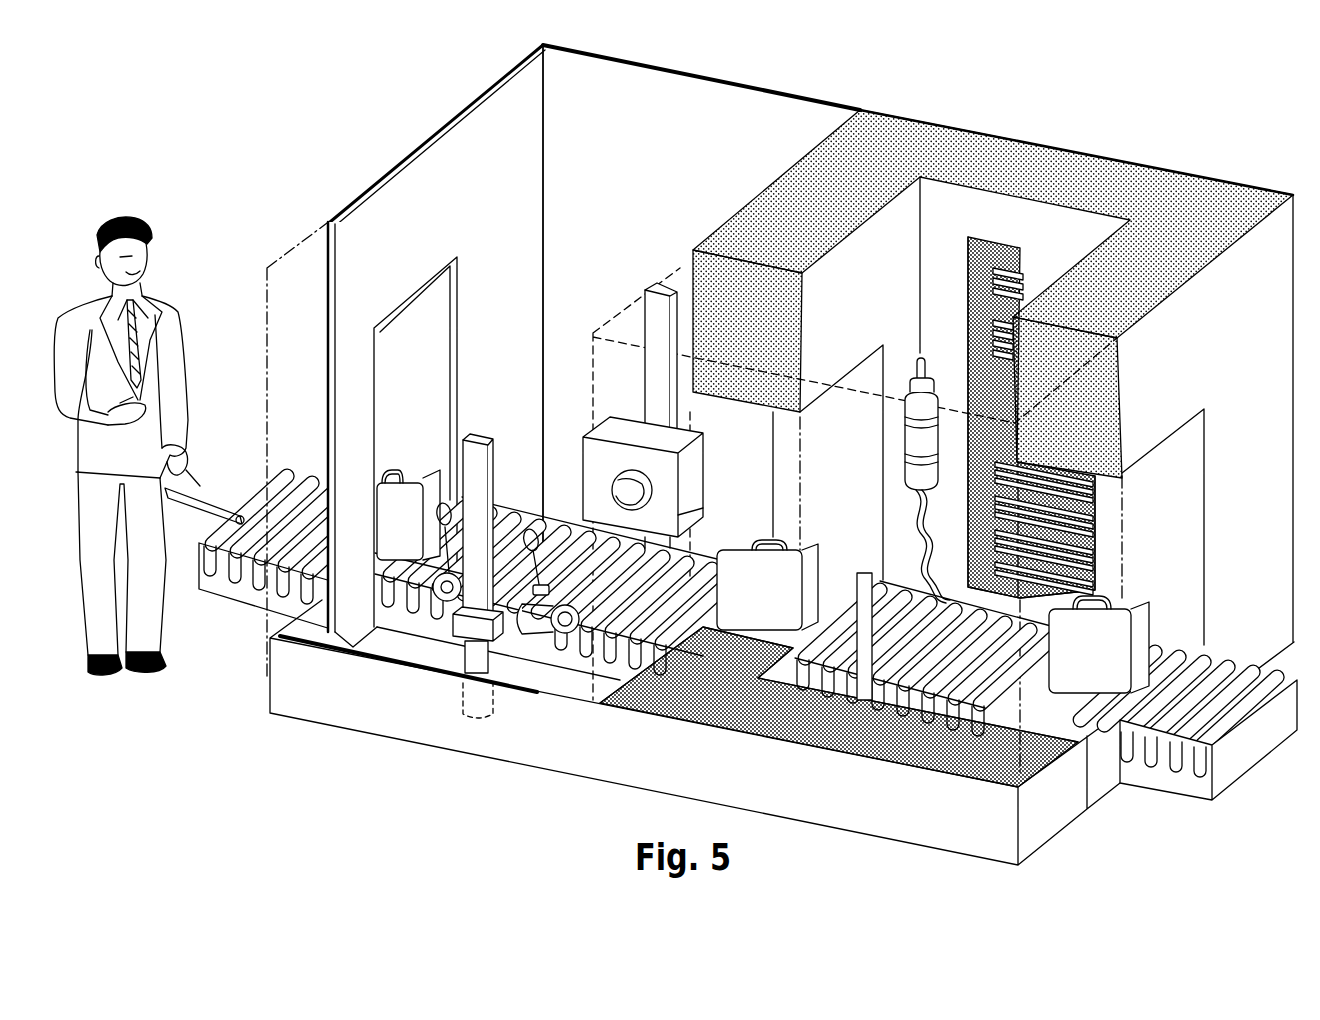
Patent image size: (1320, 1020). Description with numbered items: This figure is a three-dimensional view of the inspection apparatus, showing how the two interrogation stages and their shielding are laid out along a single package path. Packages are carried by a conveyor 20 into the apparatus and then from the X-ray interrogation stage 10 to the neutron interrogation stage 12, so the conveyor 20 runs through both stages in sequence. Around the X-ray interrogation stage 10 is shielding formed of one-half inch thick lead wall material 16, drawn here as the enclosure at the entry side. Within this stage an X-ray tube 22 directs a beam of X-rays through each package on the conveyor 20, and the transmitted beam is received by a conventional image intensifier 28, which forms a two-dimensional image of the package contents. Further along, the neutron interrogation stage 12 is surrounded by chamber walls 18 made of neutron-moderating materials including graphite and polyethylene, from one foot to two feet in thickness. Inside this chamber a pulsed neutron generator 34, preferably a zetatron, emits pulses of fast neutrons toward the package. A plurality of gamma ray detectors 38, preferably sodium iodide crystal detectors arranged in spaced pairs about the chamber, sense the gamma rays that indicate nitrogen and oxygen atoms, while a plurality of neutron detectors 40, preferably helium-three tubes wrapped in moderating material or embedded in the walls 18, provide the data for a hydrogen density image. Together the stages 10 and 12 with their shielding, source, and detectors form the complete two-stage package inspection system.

The X-ray interrogation stage 10 is at (633, 173).
The neutron interrogation stage 12 is at (858, 293).
The lead wall material 16 is at (327, 314).
The chamber walls 18 is at (1179, 227).
The conveyor 20 is at (289, 474).
The X-ray tube 22 is at (527, 635).
The image intensifier 28 is at (623, 490).
The pulsed neutron generator 34 is at (907, 407).
The gamma ray detectors 38 is at (893, 575).
The neutron detectors 40 is at (1043, 273).